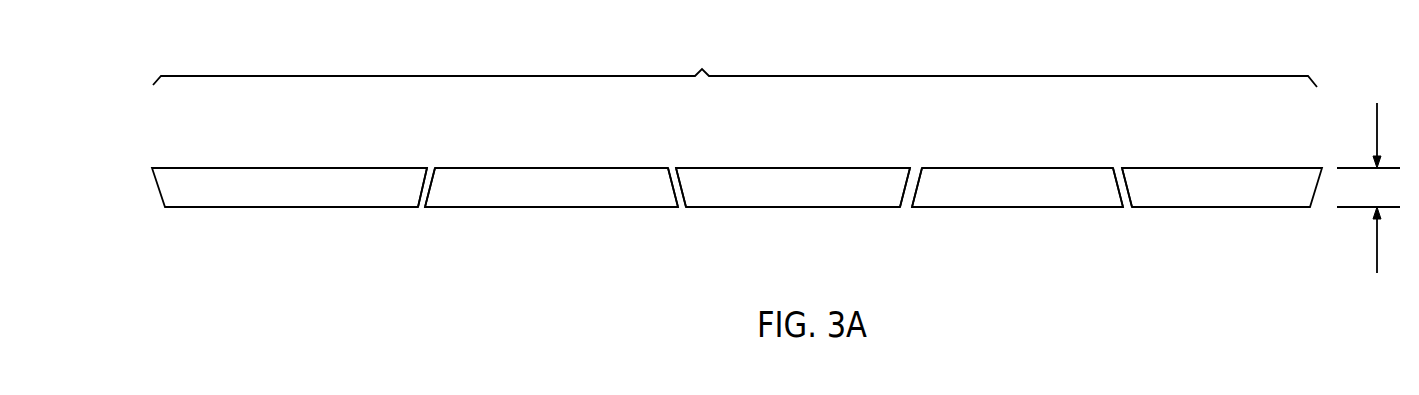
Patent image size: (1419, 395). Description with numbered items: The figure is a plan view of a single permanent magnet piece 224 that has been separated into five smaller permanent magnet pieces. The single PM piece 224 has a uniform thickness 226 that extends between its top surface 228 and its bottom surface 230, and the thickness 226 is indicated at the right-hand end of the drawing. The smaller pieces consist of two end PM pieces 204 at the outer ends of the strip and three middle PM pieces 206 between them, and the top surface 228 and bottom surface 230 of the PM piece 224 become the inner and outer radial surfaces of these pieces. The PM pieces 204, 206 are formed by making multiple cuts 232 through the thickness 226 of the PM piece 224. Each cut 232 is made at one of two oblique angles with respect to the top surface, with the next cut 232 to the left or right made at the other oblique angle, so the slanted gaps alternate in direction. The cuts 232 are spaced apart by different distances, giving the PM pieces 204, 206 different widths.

The end PM pieces 204 is at (298, 197).
The middle PM pieces 206 is at (553, 195).
The single PM piece 224 is at (735, 64).
The uniform thickness 226 is at (1368, 176).
The top surface 228 is at (532, 178).
The bottom surface 230 is at (803, 193).
The cuts 232 is at (424, 188).